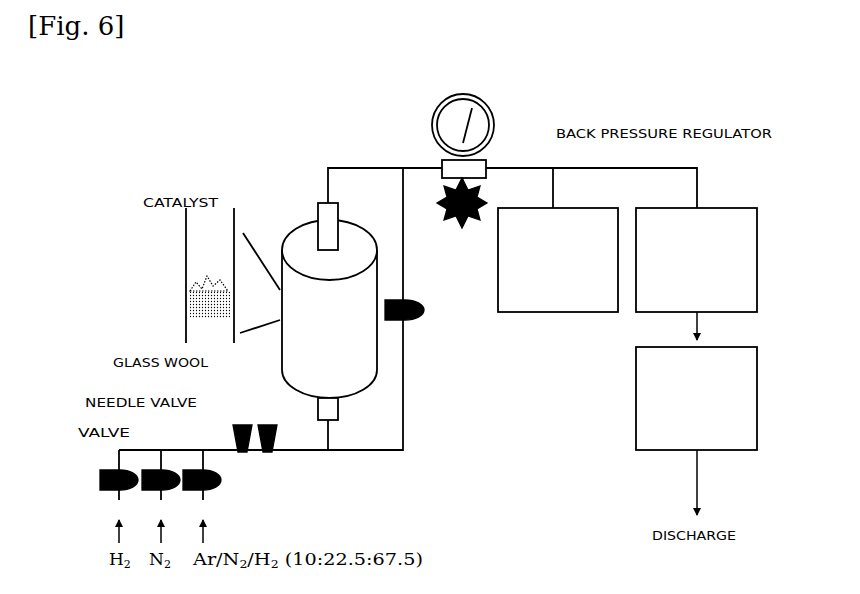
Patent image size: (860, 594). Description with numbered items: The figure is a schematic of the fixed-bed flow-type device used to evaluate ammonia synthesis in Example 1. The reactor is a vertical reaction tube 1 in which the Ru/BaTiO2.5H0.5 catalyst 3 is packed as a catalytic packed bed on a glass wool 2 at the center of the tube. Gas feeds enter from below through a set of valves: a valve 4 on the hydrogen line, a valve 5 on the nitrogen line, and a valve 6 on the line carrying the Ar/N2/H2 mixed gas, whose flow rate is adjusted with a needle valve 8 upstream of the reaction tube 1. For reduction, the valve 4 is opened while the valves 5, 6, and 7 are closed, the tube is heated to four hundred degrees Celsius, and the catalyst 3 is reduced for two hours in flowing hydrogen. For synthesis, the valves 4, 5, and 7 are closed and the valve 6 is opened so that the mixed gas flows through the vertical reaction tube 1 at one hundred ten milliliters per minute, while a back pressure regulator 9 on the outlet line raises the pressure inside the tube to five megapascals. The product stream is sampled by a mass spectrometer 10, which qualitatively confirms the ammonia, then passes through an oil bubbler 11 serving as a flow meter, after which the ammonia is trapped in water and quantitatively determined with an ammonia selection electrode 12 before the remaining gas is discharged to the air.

The vertical reaction tube 1 is at (303, 228).
The glass wool 2 is at (200, 313).
The catalyst 3 is at (202, 263).
The valve 4 is at (100, 478).
The valve 5 is at (143, 488).
The valve 6 is at (222, 485).
The valve 7 is at (425, 306).
The needle valve 8 is at (250, 412).
The back pressure regulator 9 is at (493, 120).
The mass spectrometer 10 is at (498, 298).
The oil bubbler (flow meter) 11 is at (757, 250).
The ammonia selection electrode 12 is at (757, 400).